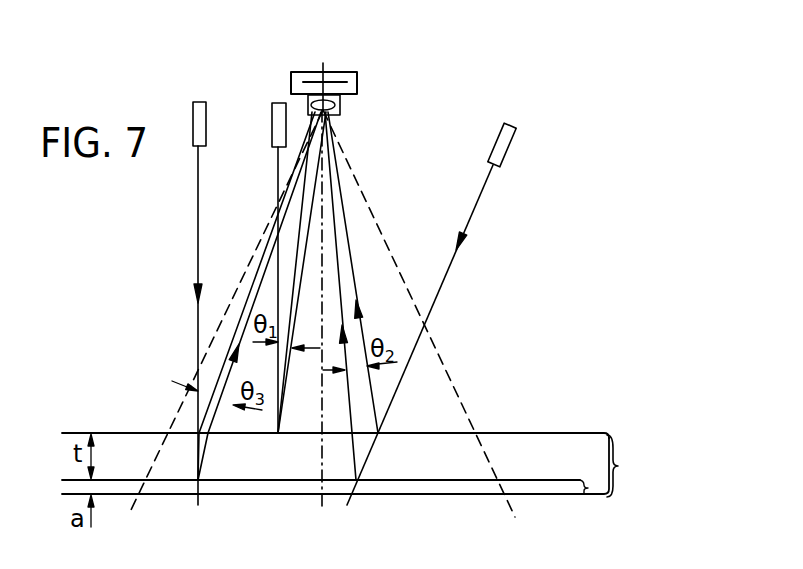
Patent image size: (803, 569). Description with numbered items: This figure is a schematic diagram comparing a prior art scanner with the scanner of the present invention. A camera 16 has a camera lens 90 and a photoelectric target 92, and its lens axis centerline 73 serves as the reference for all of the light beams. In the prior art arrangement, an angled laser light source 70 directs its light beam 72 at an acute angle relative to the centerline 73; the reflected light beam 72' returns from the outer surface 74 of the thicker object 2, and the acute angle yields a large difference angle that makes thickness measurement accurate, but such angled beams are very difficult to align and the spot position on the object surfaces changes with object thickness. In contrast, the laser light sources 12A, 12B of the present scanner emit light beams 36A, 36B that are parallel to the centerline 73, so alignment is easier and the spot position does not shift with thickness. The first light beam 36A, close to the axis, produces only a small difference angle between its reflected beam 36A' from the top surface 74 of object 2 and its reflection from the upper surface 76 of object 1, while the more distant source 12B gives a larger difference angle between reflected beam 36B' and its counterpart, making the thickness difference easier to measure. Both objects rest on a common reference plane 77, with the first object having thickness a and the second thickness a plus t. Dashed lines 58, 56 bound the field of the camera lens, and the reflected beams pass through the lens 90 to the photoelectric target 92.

The camera 16 is at (357, 72).
The photoelectric target 92 is at (305, 82).
The camera lens 90 is at (340, 106).
The laser light source 12A is at (272, 120).
The laser light source 12B is at (193, 117).
The angled laser light source 70 is at (510, 150).
The first light beam 36A is at (244, 290).
The light beam 36B is at (144, 325).
The reflected beam 36A' is at (229, 272).
The reflected light beam 36B' is at (259, 296).
The light beam axis 72 is at (429, 335).
The reflected light beam 72' is at (374, 272).
The field of view boundary 58 is at (178, 410).
The field of view boundary 56 is at (445, 366).
The lens axis centerline 73 is at (323, 445).
The second object surface 74 is at (507, 432).
The first object surface 76 is at (400, 480).
The reference plane 77 is at (437, 495).
The object 2 is at (611, 462).
The object 1 is at (589, 487).